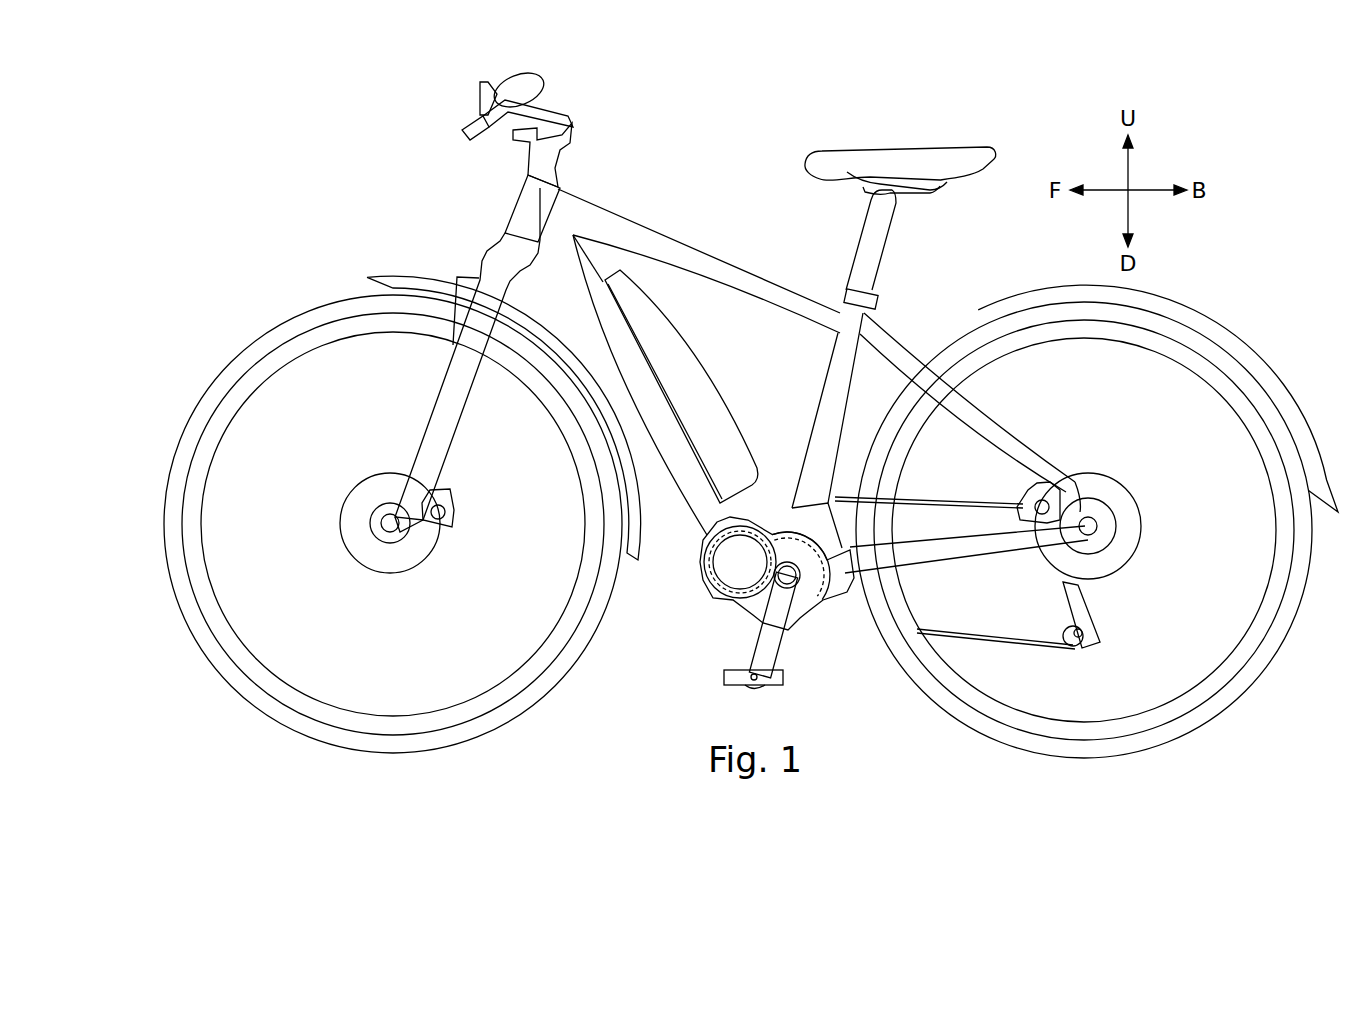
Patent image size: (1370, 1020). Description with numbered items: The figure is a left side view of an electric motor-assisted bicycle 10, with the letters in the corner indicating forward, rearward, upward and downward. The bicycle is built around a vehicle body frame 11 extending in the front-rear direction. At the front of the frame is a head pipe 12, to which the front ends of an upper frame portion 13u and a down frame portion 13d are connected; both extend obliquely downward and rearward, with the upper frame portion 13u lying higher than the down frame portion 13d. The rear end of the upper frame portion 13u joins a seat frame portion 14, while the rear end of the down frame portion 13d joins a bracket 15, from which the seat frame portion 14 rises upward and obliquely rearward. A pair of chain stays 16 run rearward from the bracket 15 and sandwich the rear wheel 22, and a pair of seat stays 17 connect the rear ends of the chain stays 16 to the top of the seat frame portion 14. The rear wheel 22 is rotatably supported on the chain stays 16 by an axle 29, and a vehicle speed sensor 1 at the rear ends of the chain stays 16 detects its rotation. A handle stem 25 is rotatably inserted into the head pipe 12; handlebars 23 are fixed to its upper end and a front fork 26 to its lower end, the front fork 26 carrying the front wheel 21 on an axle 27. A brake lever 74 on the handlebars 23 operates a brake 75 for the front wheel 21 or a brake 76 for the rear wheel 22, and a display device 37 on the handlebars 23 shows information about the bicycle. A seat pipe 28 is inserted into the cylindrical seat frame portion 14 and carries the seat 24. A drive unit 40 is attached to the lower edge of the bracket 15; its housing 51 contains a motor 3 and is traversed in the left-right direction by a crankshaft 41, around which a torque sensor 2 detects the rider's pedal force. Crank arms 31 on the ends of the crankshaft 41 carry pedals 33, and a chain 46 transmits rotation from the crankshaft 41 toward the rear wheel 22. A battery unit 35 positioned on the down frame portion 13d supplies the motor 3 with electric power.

The vehicle speed sensor 1 is at (1110, 503).
The torque sensor 2 is at (780, 583).
The motor 3 is at (712, 592).
The electric motor-assisted bicycle 10 is at (760, 120).
The vehicle body frame 11 is at (720, 255).
The head pipe 12 is at (522, 207).
The upper frame portion 13u is at (620, 233).
The down frame portion 13d is at (620, 334).
The seat frame portion 14 is at (828, 410).
The bracket 15 is at (772, 500).
The chain stays 16 is at (928, 548).
The seat stays 17 is at (985, 423).
The front wheel 21 is at (308, 321).
The rear wheel 22 is at (1197, 343).
The handlebars 23 is at (525, 89).
The seat 24 is at (903, 163).
The handle stem 25 is at (550, 163).
The front fork 26 is at (443, 428).
The axle 27 is at (350, 523).
The seat pipe 28 is at (872, 265).
The axle 29 is at (1100, 547).
The crank arms 31 is at (777, 613).
The pedals 33 is at (770, 678).
The battery unit 35 is at (718, 437).
The display device 37 is at (556, 112).
The drive unit 40 is at (713, 603).
The crankshaft 41 is at (798, 605).
The chain 46 is at (970, 637).
The housing 51 is at (705, 550).
The brake lever 74 is at (467, 122).
The brake 75 is at (452, 490).
The brake 76 is at (1032, 498).